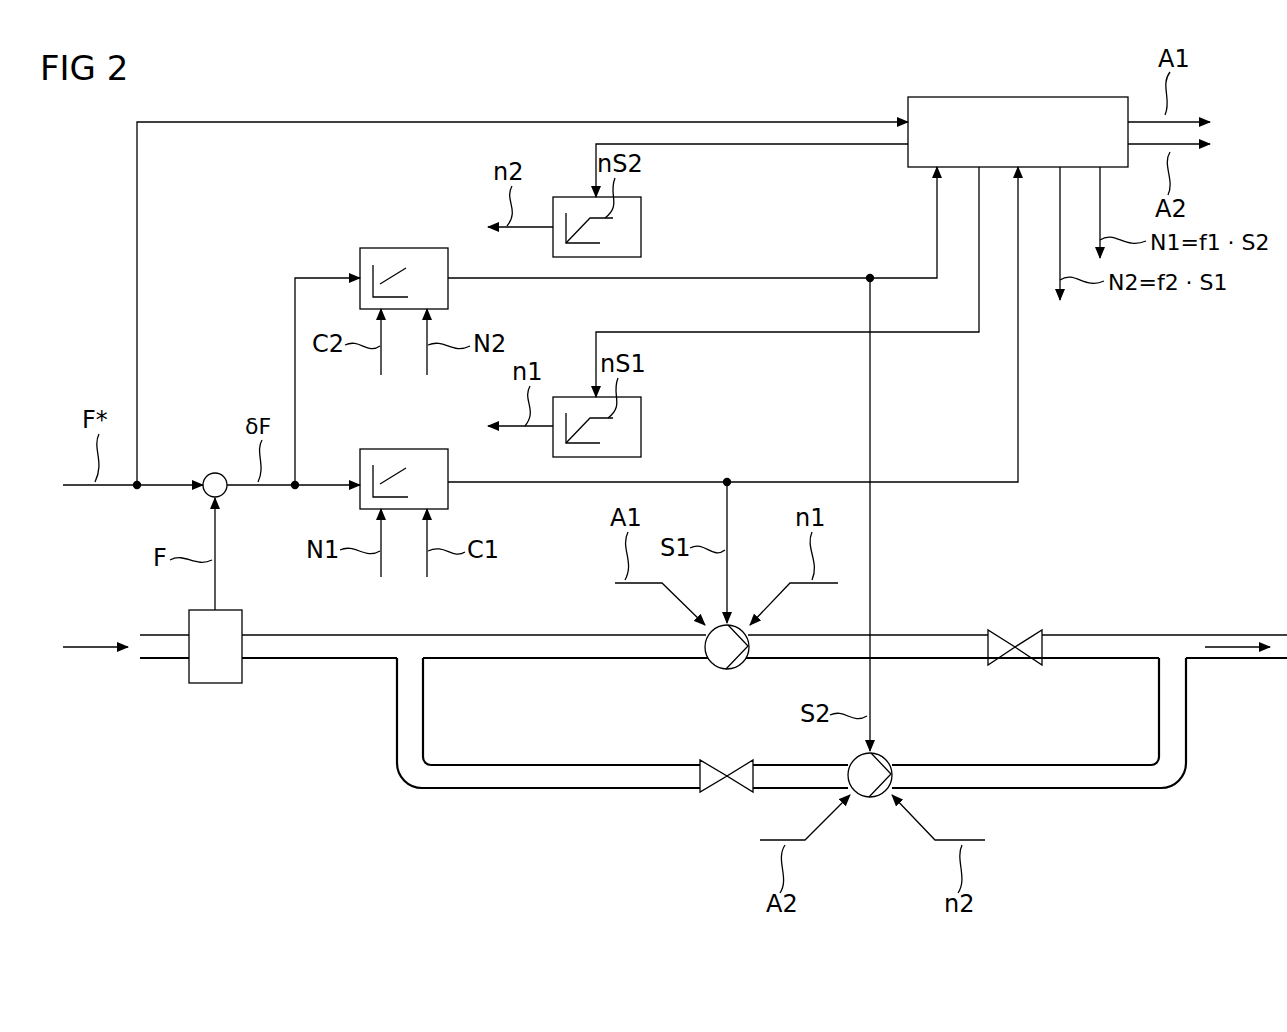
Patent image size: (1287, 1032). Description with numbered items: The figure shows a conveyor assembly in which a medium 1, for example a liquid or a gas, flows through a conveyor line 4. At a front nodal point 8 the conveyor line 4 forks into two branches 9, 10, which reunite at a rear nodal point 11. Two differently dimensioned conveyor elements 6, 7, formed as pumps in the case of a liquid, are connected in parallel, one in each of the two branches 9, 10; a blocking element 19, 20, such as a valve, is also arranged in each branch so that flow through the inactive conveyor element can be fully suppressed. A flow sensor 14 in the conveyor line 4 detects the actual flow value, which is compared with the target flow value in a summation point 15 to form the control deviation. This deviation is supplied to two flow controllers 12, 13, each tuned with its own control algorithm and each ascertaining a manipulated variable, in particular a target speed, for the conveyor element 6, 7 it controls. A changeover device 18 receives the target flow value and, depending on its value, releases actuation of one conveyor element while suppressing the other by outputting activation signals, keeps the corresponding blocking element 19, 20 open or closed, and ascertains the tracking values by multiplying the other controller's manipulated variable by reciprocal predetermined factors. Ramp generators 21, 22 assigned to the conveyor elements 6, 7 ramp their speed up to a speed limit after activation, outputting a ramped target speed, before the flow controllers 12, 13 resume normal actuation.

The medium 1 is at (97, 650).
The conveyor line 4 is at (172, 660).
The flow sensor 14 is at (214, 683).
The summation point 15 is at (213, 473).
The flow controller 12 is at (403, 449).
The flow controller 13 is at (403, 248).
The changeover device 18 is at (1018, 97).
The ramp generator 21 is at (641, 426).
The ramp generator 22 is at (641, 227).
The conveyor element 6 is at (722, 669).
The conveyor element 7 is at (862, 797).
The front nodal point 8 is at (410, 650).
The branch 9 is at (530, 652).
The branch 10 is at (535, 792).
The rear nodal point 11 is at (1170, 648).
The blocking element 19 is at (1022, 632).
The blocking element 20 is at (718, 795).